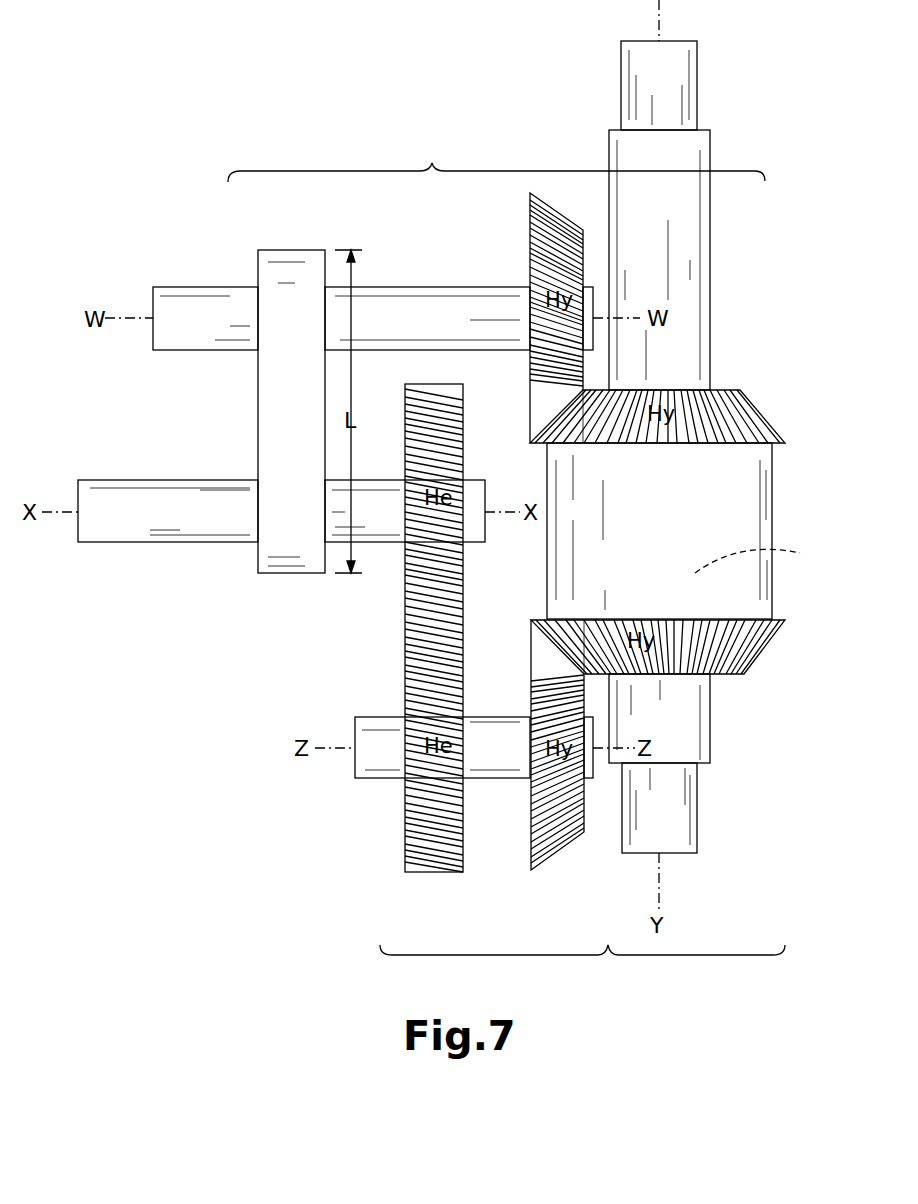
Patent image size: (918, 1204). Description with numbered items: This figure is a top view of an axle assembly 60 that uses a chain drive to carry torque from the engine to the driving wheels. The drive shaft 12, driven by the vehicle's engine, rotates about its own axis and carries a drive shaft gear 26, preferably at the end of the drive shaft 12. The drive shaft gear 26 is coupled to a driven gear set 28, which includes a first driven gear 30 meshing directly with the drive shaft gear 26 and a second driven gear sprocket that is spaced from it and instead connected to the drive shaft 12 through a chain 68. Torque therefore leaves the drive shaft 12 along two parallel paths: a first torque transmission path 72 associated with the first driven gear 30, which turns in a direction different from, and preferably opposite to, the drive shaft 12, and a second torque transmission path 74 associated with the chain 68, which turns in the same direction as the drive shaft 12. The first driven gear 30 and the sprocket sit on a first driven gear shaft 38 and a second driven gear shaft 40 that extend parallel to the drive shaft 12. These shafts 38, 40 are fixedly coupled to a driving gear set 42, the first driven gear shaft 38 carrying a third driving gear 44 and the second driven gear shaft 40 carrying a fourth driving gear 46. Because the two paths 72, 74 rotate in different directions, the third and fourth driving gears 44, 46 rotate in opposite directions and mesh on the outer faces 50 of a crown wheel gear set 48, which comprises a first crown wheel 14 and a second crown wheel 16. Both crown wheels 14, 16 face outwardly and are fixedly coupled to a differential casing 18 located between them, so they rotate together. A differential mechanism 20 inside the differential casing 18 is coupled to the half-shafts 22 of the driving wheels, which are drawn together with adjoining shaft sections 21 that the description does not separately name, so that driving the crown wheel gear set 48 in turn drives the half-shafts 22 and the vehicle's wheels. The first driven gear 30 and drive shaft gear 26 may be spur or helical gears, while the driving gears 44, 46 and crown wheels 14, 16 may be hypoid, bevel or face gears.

The drive shaft 12 is at (140, 518).
The first crown wheel 14 is at (753, 633).
The second crown wheel 16 is at (768, 418).
The differential casing 18 is at (733, 508).
The differential mechanism 20 is at (761, 556).
The output shaft 21 is at (694, 275).
The half-shafts 22 is at (665, 101).
The drive shaft gear 26 is at (406, 572).
The driven gear set 28 is at (287, 242).
The first driven gear 30 is at (407, 825).
The first driven gear shaft 38 is at (372, 765).
The second driven gear shaft 40 is at (180, 300).
The driving gear set 42 is at (549, 186).
The third driving gear 44 is at (528, 823).
The fourth driving gear 46 is at (553, 245).
The crown wheel gear set 48 is at (767, 390).
The outer faces 50 is at (705, 408).
The axle assembly 60 is at (378, 86).
The chain 68 is at (275, 513).
The first torque transmission path 72 is at (582, 972).
The second torque transmission path 74 is at (496, 159).